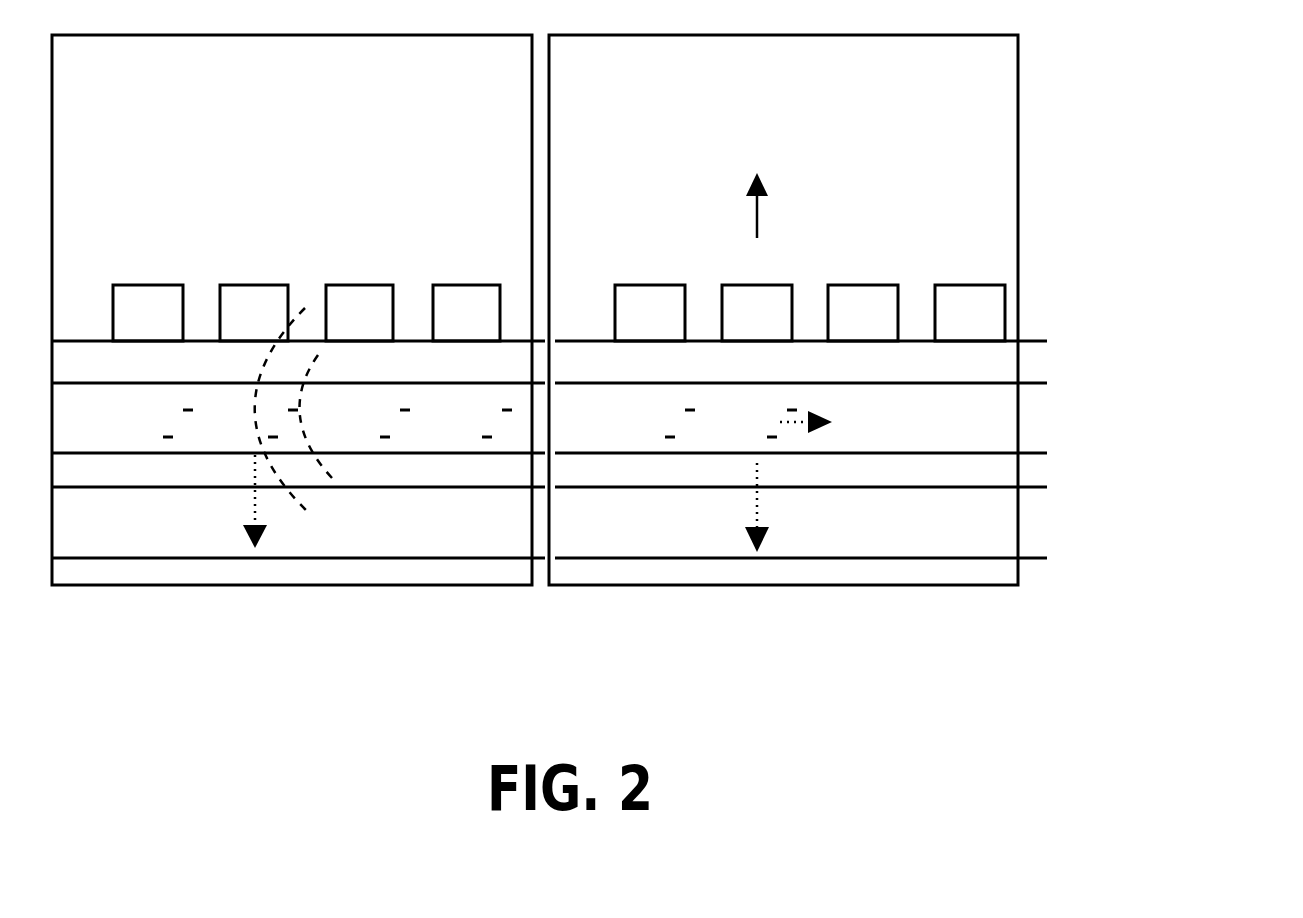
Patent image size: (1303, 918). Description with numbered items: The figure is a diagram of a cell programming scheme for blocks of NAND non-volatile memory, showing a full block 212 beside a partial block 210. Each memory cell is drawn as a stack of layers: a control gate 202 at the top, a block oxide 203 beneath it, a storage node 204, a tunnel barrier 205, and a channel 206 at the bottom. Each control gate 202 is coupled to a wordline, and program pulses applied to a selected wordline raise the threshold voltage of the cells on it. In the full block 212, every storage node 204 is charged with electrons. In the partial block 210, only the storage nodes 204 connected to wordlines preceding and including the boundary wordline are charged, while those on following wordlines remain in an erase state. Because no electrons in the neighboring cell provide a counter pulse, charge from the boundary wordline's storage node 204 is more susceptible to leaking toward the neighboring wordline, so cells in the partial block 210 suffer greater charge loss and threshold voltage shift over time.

The full block 212 is at (432, 112).
The partial block 210 is at (988, 112).
The control gate 202 is at (1243, 328).
The block oxide 203 is at (1235, 378).
The storage node 204 is at (1267, 433).
The tunnel barrier 205 is at (1287, 488).
The channel 206 is at (1203, 543).